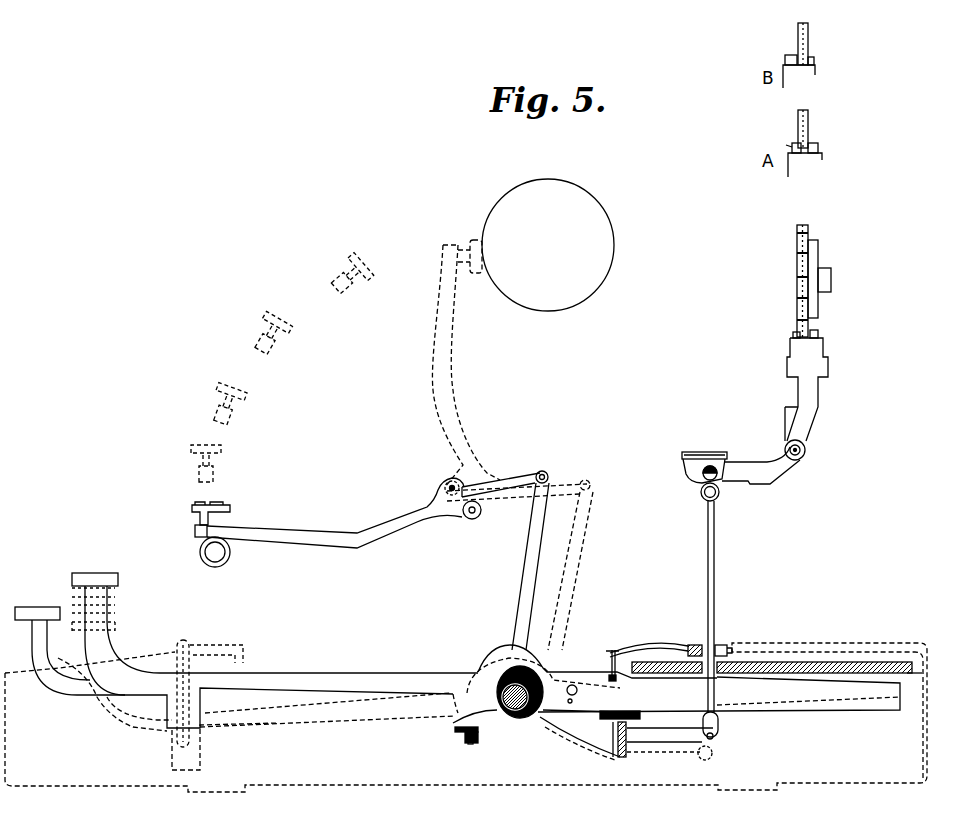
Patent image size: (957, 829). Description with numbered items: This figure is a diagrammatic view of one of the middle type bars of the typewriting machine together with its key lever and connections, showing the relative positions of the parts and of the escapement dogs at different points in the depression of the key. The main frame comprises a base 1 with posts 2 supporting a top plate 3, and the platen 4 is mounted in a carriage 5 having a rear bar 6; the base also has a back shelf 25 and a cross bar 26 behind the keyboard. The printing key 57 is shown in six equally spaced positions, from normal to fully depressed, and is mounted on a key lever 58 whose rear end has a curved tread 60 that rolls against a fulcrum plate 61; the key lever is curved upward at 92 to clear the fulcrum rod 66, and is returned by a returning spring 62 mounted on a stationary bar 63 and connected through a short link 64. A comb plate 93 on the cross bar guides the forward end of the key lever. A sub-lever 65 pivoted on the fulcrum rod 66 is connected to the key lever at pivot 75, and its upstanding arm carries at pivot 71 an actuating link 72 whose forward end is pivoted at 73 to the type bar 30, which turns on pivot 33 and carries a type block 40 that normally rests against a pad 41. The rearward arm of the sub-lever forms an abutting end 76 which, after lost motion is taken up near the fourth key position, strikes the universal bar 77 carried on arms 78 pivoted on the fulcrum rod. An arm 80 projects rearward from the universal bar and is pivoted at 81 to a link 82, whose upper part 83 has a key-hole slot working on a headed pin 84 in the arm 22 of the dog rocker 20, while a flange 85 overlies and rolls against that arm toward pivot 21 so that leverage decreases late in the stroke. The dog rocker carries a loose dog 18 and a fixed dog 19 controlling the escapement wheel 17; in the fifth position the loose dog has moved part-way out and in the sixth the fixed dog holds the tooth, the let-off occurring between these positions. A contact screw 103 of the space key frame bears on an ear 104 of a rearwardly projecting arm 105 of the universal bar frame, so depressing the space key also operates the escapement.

The base 1 is at (927, 743).
The posts 2 is at (117, 597).
The top plate 3 is at (117, 605).
The platen 4 is at (606, 221).
The carriage 5 is at (131, 632).
The rear bar 6 is at (120, 638).
The escapement wheel 17 is at (797, 297).
The loose dog 18 is at (793, 336).
The fixed dog 19 is at (818, 334).
The dog rocker 20 is at (819, 388).
The pivot 21 is at (793, 455).
The arm 22 is at (760, 477).
The back shelf 25 is at (835, 643).
The cross bar 26 is at (240, 654).
The type bar 30 is at (428, 527).
The pivot 33 is at (474, 522).
The type block 40 is at (230, 508).
The pad 41 is at (212, 566).
The printing key 57 is at (79, 572).
The key lever 58 is at (357, 675).
The tread 60 is at (813, 678).
The fulcrum plate 61 is at (768, 662).
The returning spring 62 is at (654, 647).
The stationary bar 63 is at (705, 643).
The link 64 is at (610, 648).
The sub-lever 65 is at (527, 567).
The fulcrum rod 66 is at (510, 710).
The pivot 71 is at (552, 472).
The actuating link 72 is at (508, 478).
The pivot 73 is at (450, 487).
The pivot 75 is at (572, 685).
The abutting end 76 is at (640, 713).
The universal bar 77 is at (622, 757).
The arm 78 is at (572, 732).
The arm 80 is at (682, 742).
The pivot 81 is at (715, 735).
The link 82 is at (713, 542).
The part 83 is at (702, 498).
The headed pin 84 is at (707, 473).
The flange 85 is at (700, 453).
The upward curve 92 is at (533, 653).
The comb plate 93 is at (180, 737).
The contact screw 103 is at (472, 744).
The ear 104 is at (463, 737).
The arm 105 is at (455, 728).